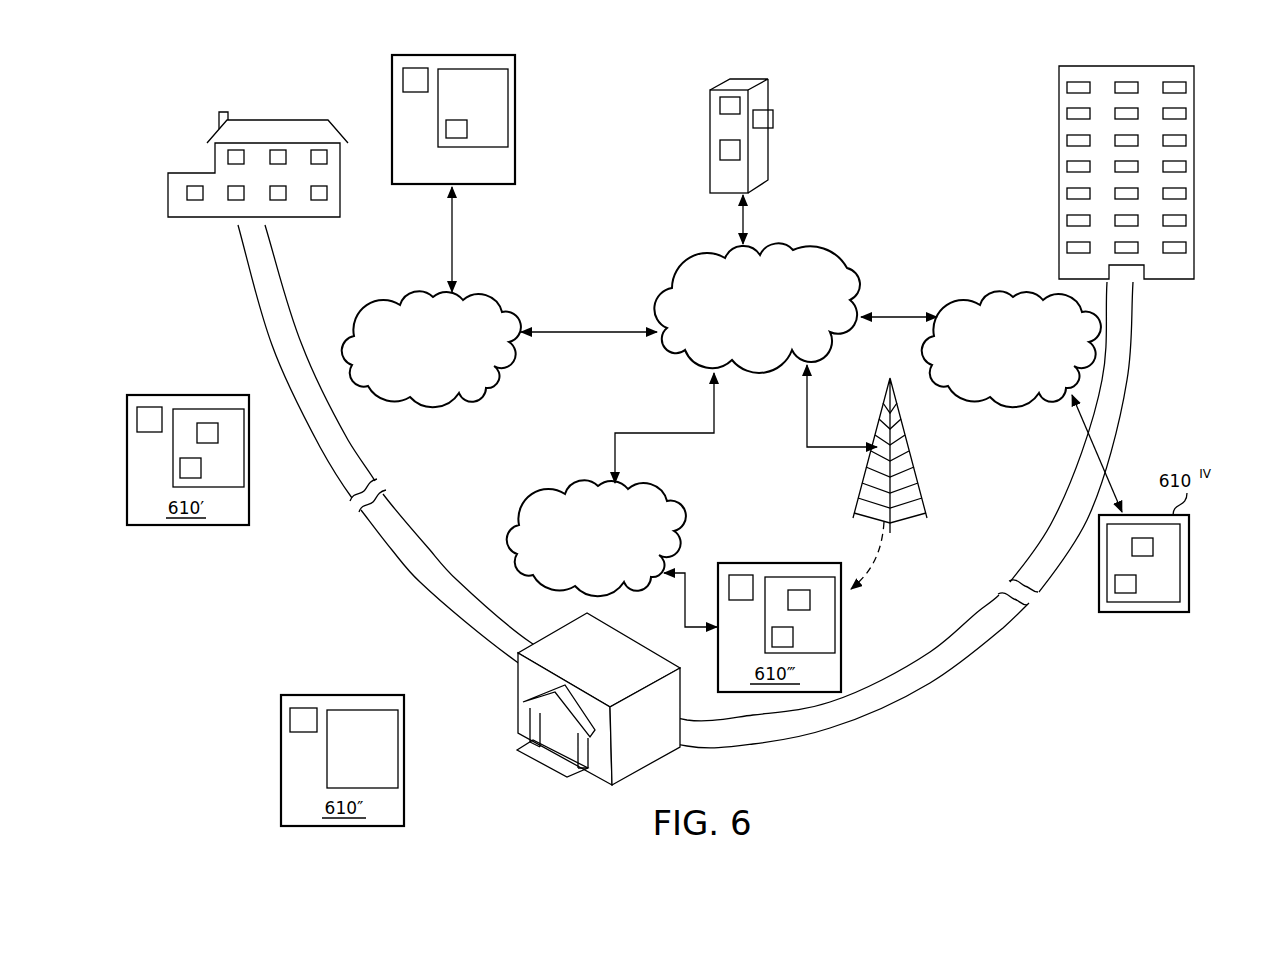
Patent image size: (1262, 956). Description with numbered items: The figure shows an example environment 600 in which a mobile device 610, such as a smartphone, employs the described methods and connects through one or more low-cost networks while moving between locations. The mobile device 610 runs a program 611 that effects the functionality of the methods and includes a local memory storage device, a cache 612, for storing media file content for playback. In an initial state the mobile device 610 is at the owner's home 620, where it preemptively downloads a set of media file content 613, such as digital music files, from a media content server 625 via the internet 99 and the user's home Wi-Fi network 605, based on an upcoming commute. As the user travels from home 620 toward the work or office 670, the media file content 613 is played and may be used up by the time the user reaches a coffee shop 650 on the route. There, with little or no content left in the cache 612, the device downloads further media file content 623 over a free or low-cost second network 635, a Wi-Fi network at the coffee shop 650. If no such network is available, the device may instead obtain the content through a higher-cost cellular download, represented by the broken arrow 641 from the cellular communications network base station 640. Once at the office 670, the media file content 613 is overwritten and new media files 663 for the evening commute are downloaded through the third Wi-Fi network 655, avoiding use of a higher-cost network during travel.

The example environment 600 is at (619, 395).
The home Wi-Fi network 605 is at (506, 300).
The mobile device 610 is at (437, 178).
The program 611 is at (412, 68).
The cache 612 is at (512, 83).
The media file content 613 is at (467, 129).
The home 620 is at (277, 120).
The further media file content 623 is at (810, 600).
The media content server 625 is at (768, 160).
The second network 635 is at (668, 490).
The cellular communications network base station 640 is at (914, 480).
The broken arrow 641 is at (878, 560).
The coffee shop 650 is at (518, 708).
The third Wi-Fi network 655 is at (925, 302).
The new media files 663 is at (1153, 548).
The work or office 670 is at (1059, 156).
The internet 99 is at (845, 262).